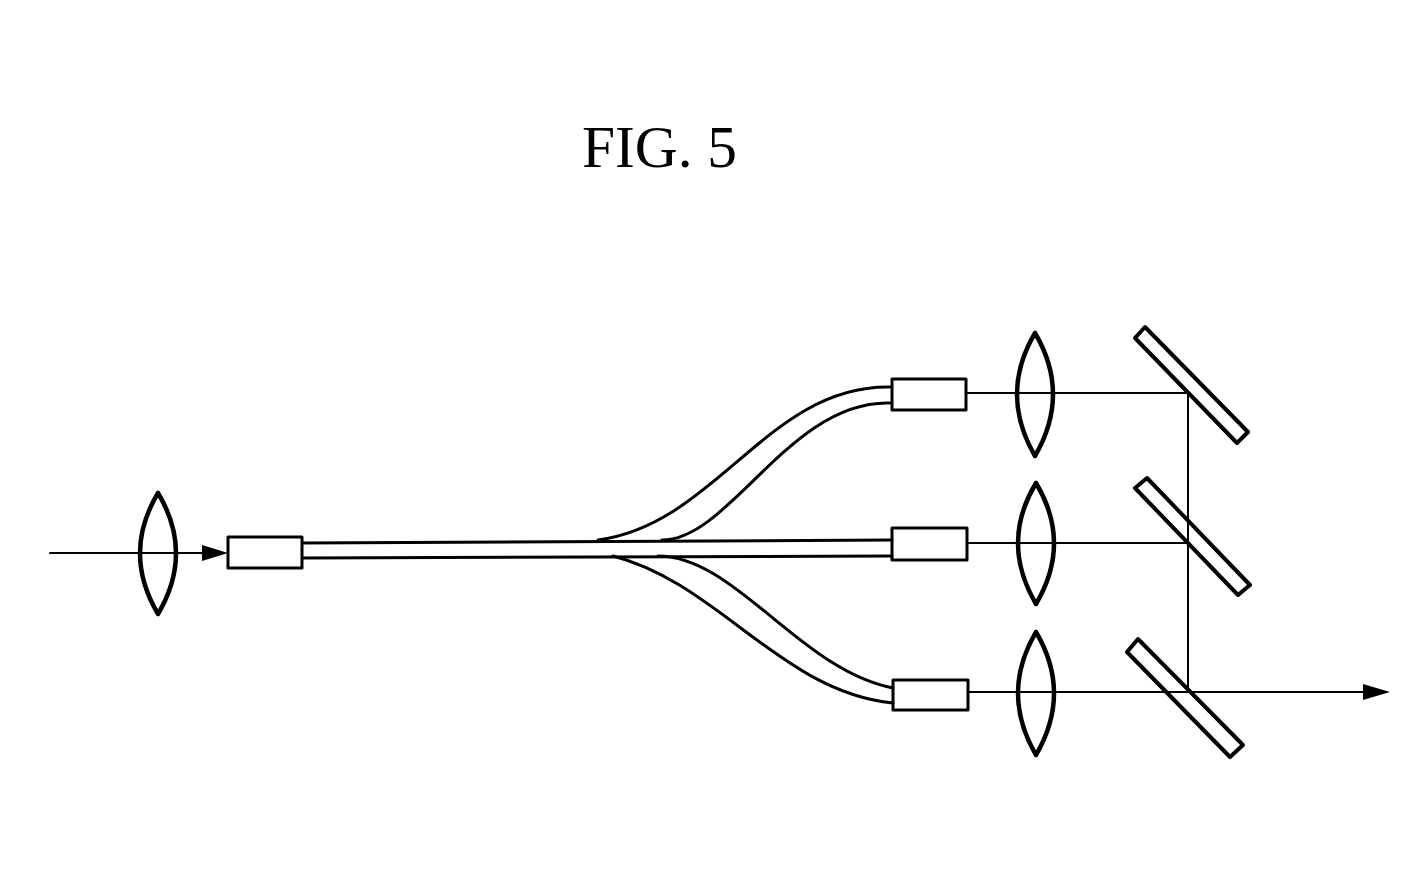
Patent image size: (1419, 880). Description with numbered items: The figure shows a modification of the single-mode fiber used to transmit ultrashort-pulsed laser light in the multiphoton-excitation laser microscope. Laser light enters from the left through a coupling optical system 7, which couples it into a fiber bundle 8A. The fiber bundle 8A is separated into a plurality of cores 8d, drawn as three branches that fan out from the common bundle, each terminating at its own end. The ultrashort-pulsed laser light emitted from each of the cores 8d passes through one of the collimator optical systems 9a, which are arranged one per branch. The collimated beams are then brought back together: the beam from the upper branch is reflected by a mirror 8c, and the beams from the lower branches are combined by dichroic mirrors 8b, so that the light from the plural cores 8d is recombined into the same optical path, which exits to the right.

The coupling optical system 7 is at (172, 518).
The fiber bundle 8A is at (472, 540).
The cores 8d is at (808, 415).
The collimator optical systems 9a is at (1047, 342).
The dichroic mirrors 8b is at (1218, 548).
The mirrors 8c is at (1215, 393).